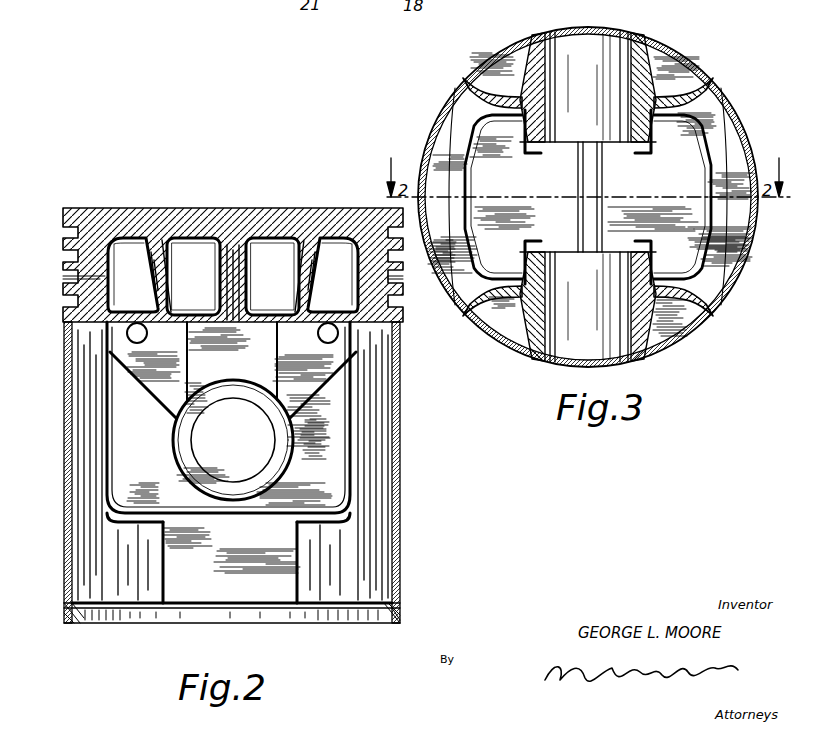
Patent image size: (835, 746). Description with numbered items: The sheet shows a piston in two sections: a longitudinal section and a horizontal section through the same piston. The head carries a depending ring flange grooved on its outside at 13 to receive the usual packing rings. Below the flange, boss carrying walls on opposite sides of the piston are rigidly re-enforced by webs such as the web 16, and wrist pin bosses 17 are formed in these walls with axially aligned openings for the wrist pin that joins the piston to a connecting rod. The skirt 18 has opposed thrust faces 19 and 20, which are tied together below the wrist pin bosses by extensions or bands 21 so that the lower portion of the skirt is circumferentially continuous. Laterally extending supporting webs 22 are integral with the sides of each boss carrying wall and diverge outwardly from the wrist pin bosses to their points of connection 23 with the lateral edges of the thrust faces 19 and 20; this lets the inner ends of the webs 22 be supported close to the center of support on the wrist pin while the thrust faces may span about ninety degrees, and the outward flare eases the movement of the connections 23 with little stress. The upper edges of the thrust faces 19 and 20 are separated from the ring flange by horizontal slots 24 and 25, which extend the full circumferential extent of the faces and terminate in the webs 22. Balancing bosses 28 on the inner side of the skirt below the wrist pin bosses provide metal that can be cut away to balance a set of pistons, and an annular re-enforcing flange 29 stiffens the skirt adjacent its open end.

In FIG. 2, the ring flange grooves 13 is at (76, 277).
In FIG. 2, the web 16 is at (233, 262).
In FIG. 3, the web 16 is at (530, 158).
In FIG. 2, the wrist pin boss 17 is at (183, 447).
In FIG. 3, the wrist pin boss 17 is at (641, 45).
In FIG. 2, the skirt 18 is at (400, 577).
In FIG. 2, the thrust face 19 is at (64, 444).
In FIG. 2, the thrust face 20 is at (400, 448).
In FIG. 3, the thrust face 20 is at (750, 134).
In FIG. 2, the extension or band 21 is at (333, 585).
In FIG. 3, the laterally extending supporting web 22 is at (485, 96).
In FIG. 3, the point of connection 23 is at (479, 95).
In FIG. 2, the horizontal slot 24 is at (126, 327).
In FIG. 2, the horizontal slot 25 is at (339, 327).
In FIG. 2, the balancing boss 28 is at (213, 590).
In FIG. 2, the re-enforcing flange 29 is at (66, 624).